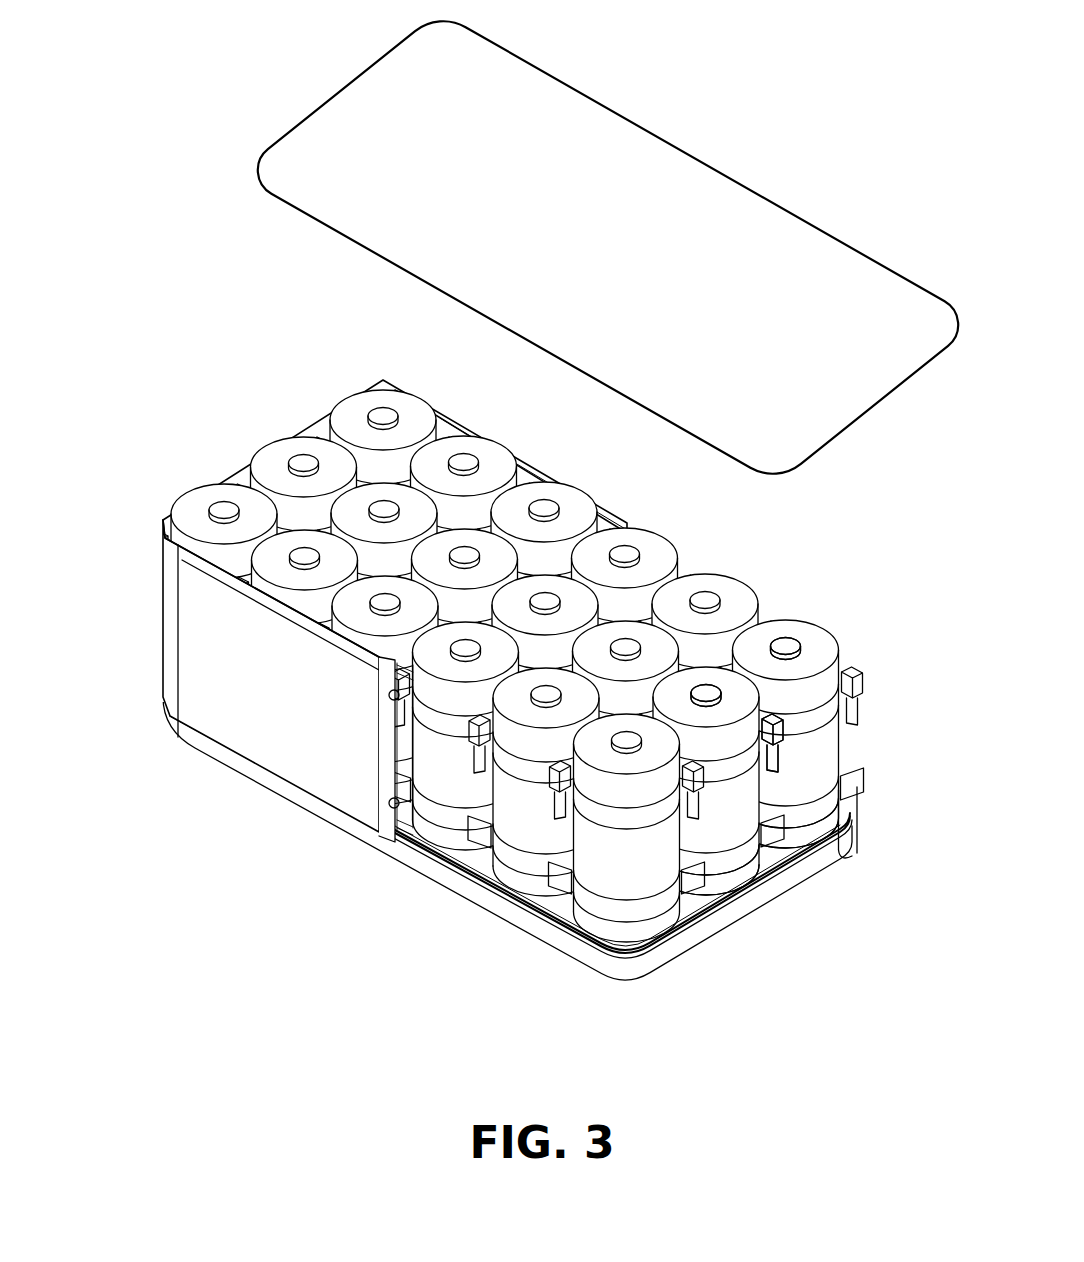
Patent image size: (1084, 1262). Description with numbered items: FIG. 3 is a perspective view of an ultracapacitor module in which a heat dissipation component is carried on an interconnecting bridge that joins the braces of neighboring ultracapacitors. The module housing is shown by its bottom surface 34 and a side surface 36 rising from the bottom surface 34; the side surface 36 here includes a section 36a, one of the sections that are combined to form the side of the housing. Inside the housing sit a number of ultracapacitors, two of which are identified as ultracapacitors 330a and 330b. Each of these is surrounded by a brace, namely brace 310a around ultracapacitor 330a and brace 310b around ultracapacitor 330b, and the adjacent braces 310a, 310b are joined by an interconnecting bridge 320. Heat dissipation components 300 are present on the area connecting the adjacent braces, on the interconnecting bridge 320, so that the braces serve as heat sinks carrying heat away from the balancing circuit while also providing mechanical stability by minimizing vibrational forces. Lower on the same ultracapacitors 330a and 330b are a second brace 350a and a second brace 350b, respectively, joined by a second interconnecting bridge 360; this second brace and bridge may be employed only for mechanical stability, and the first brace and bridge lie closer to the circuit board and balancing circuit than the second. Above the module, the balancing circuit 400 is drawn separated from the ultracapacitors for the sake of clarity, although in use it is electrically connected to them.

The balancing circuit 400 is at (265, 148).
The side surface 36 is at (135, 606).
The side surface section 36a is at (163, 520).
The bottom surface 34 is at (367, 847).
The heat dissipation component 300 is at (547, 727).
The brace 310a is at (820, 717).
The brace 310b is at (725, 770).
The interconnecting bridge 320 is at (763, 720).
The ultracapacitor 330a is at (782, 617).
The ultracapacitor 330b is at (712, 673).
The second brace 350a is at (843, 827).
The second brace 350b is at (732, 878).
The second interconnecting bridge 360 is at (766, 830).